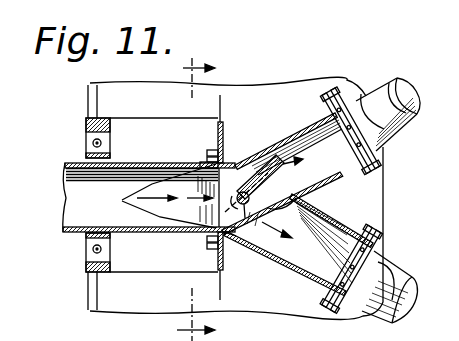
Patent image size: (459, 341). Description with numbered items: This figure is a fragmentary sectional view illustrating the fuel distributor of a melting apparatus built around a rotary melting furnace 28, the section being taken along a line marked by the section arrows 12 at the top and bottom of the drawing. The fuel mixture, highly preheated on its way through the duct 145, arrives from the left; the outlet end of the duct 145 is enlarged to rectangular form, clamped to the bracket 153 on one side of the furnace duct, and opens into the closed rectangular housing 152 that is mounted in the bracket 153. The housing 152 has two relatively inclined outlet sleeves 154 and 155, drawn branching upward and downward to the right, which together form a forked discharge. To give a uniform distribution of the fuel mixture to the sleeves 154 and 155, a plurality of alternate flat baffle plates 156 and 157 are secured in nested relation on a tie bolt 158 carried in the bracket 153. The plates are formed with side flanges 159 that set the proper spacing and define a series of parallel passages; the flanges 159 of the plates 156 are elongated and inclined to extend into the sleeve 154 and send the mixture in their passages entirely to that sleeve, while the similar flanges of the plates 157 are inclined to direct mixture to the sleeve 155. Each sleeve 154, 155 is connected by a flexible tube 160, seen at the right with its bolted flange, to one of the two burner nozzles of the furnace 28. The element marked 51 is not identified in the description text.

The section line 12 is at (196, 192).
The rotary melting furnace 28 is at (326, 74).
The duct 145 is at (72, 179).
The closed rectangular housing 152 is at (215, 152).
The bracket 153 is at (147, 273).
The outlet sleeve 154 is at (302, 131).
The outlet sleeve 155 is at (326, 283).
The baffle plate 156 is at (218, 215).
The baffle plate 157 is at (236, 162).
The tie bolt 158 is at (247, 240).
The side flange 159 is at (297, 213).
The flexible tube 160 is at (398, 135).
The wall 51 is at (236, 242).